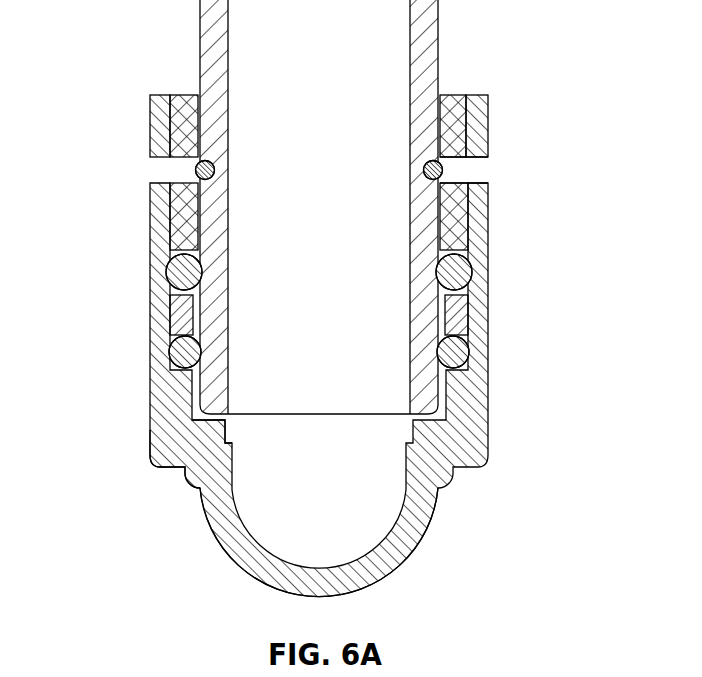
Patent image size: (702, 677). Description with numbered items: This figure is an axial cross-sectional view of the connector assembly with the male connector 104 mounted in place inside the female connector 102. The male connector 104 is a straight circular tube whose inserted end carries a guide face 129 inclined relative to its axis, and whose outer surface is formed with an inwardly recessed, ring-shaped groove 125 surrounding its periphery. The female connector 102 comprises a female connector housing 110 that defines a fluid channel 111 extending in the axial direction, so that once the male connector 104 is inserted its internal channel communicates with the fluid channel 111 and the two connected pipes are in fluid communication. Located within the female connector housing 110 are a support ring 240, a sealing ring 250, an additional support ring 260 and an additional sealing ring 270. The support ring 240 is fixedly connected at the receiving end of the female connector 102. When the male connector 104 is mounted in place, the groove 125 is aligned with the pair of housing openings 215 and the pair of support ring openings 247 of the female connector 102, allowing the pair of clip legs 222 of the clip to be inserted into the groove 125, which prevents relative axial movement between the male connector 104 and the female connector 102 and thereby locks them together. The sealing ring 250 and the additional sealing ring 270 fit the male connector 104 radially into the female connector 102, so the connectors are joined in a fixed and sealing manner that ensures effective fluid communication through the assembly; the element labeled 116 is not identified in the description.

The female connector 102 is at (158, 312).
The male connector 104 is at (438, 46).
The female connector housing 110 is at (172, 465).
The fluid channel 111 is at (388, 513).
The seal 116 is at (427, 176).
The groove 125 is at (218, 157).
The guide face 129 is at (208, 412).
The housing openings 215 is at (480, 176).
The clip legs 222 is at (205, 181).
The support ring 240 is at (488, 119).
The support ring openings 247 is at (186, 167).
The sealing ring 250 is at (462, 279).
The additional support ring 260 is at (462, 331).
The additional sealing ring 270 is at (462, 368).